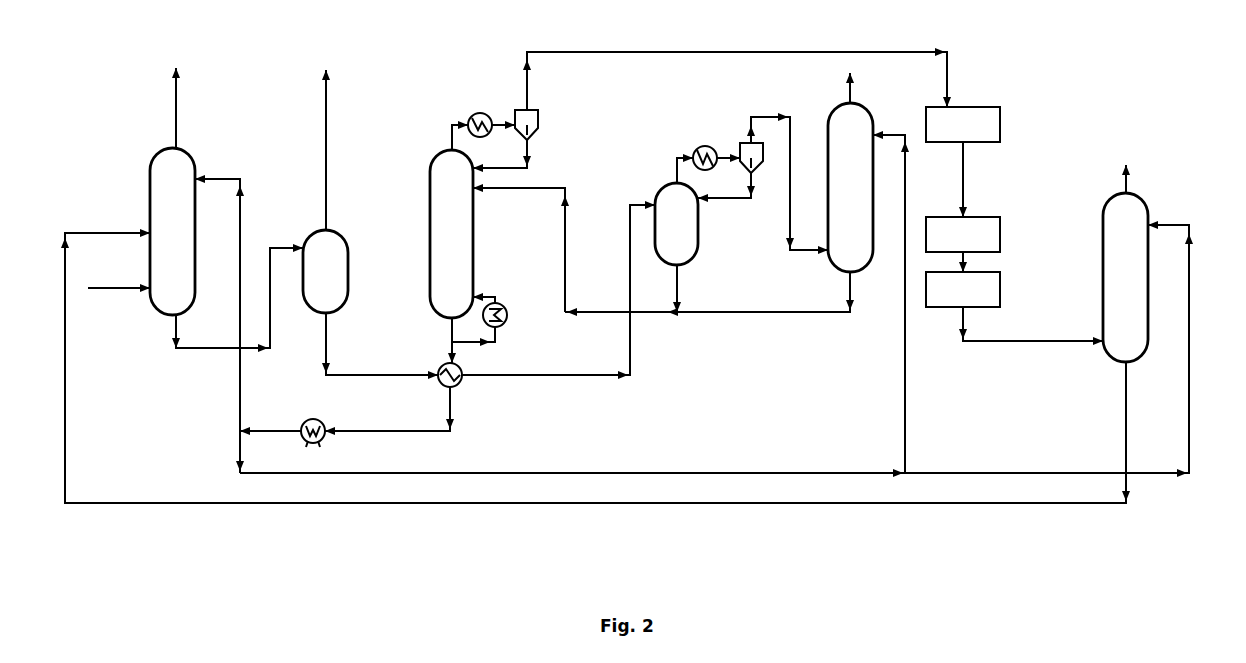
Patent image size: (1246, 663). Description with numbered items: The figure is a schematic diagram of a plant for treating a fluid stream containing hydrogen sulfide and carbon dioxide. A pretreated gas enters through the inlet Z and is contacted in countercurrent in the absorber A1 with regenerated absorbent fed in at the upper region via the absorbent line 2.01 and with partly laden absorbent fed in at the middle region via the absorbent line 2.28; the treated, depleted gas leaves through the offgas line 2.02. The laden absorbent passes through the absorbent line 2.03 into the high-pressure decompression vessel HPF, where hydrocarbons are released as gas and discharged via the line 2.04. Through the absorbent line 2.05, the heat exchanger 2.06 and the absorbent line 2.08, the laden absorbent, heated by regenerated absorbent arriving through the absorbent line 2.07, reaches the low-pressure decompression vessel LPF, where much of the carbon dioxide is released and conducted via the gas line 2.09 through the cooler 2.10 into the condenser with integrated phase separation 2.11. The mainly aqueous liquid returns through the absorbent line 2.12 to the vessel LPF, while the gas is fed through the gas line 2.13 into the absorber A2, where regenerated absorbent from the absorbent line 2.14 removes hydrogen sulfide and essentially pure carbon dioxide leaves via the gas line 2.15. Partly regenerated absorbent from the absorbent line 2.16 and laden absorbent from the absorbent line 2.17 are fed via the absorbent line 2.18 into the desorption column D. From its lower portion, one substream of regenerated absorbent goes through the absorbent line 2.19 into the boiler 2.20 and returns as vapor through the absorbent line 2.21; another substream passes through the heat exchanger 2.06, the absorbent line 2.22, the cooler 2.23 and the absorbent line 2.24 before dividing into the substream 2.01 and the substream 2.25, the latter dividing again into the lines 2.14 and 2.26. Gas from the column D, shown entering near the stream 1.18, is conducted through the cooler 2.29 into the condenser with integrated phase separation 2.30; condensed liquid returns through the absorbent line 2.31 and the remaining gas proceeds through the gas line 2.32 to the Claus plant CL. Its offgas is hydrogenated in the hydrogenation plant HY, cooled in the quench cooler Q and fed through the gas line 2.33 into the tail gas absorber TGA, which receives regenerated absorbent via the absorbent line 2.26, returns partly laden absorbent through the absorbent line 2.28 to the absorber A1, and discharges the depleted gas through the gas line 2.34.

The inlet Z is at (106, 286).
The absorber A1 is at (152, 305).
The high-pressure decompression vessel HPF is at (334, 226).
The desorption column D is at (429, 224).
The low-pressure decompression vessel LPF is at (662, 264).
The absorber A2 is at (862, 273).
The Claus plant CL is at (978, 106).
The hydrogenation plant HY is at (977, 216).
The quench cooler Q is at (1002, 291).
The tail gas absorber TGA is at (1104, 198).
The stream from figure 1 1.18 is at (455, 124).
The absorbent line 2.01 is at (226, 174).
The offgas line 2.02 is at (175, 100).
The absorbent line 2.03 is at (180, 354).
The line 2.04 is at (325, 100).
The absorbent line 2.05 is at (331, 342).
The heat exchanger 2.06 is at (463, 382).
The absorbent line 2.07 is at (449, 334).
The absorbent line 2.08 is at (636, 380).
The gas line 2.09 is at (676, 156).
The cooler 2.10 is at (703, 145).
The condenser with integrated phase separation 2.11 is at (744, 170).
The absorbent line 2.12 is at (740, 203).
The gas line 2.13 is at (781, 115).
The absorbent line 2.14 is at (907, 364).
The gas line 2.15 is at (853, 90).
The absorbent line 2.16 is at (680, 283).
The absorbent line 2.17 is at (777, 316).
The absorbent line 2.18 is at (567, 250).
The absorbent line 2.19 is at (474, 343).
The boiler 2.20 is at (505, 300).
The absorbent line 2.21 is at (488, 296).
The absorbent line 2.22 is at (449, 435).
The cooler 2.23 is at (313, 418).
The absorbent line 2.24 is at (266, 428).
The substream 2.25 is at (720, 471).
The absorbent line 2.26 is at (950, 471).
The absorbent line 2.28 is at (430, 505).
The cooler 2.29 is at (480, 111).
The condenser with integrated phase separation 2.30 is at (540, 125).
The absorbent line 2.31 is at (540, 165).
The gas line 2.32 is at (541, 51).
The gas line 2.33 is at (1036, 340).
The gas line 2.34 is at (1130, 182).